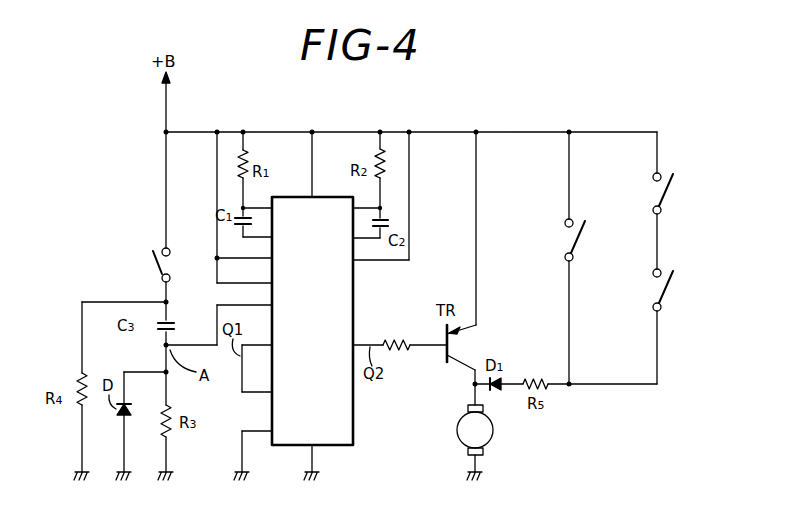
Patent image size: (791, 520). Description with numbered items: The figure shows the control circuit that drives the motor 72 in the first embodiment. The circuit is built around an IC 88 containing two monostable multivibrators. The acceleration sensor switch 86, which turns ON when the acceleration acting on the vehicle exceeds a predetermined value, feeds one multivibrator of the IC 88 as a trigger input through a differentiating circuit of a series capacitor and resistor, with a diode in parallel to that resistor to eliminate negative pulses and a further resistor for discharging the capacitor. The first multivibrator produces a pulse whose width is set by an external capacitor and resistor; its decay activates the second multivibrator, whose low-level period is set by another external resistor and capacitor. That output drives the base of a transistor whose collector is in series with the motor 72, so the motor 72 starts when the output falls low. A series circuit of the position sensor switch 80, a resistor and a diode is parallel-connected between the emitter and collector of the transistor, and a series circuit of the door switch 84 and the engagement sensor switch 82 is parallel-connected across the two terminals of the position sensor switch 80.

The motor 72 is at (494, 432).
The position sensor switch 80 is at (577, 243).
The engagement sensor switch 82 is at (665, 298).
The door switch 84 is at (665, 203).
The acceleration sensor switch 86 is at (157, 272).
The IC 88 is at (354, 428).